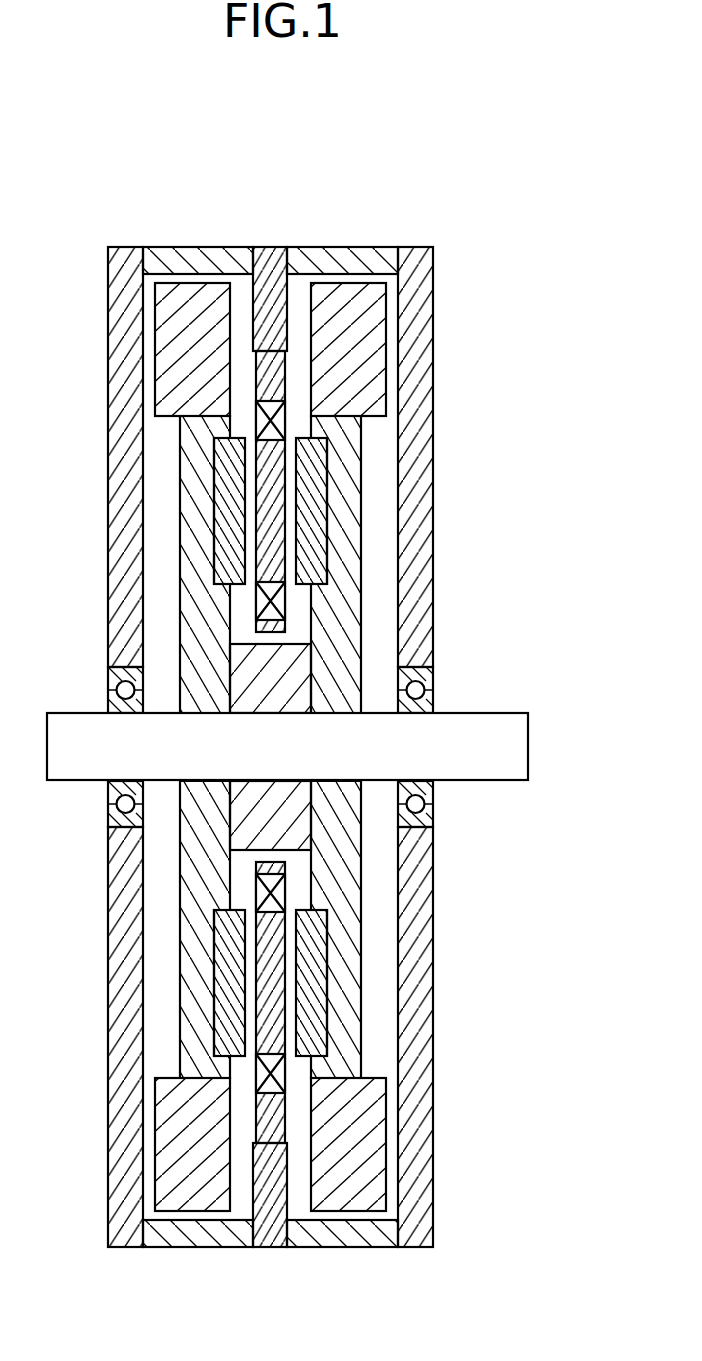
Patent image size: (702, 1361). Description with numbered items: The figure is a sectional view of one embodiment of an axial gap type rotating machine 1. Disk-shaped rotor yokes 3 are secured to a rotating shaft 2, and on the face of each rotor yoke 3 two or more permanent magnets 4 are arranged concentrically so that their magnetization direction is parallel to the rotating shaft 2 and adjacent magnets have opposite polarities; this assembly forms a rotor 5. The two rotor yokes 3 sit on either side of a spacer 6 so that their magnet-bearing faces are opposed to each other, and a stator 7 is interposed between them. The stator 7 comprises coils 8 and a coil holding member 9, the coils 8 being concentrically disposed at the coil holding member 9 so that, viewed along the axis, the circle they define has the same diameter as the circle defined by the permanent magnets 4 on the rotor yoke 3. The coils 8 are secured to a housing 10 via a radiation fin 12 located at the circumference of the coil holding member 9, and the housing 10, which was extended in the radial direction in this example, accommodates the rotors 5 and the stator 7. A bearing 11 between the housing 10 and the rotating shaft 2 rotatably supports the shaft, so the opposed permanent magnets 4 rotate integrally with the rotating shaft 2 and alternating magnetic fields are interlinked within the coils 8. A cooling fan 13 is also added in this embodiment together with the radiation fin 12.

The motor 1 is at (490, 208).
The rotating shaft 2 is at (520, 742).
The rotor yoke 3 is at (350, 485).
The permanent magnet 4 is at (225, 543).
The rotor 5 is at (368, 445).
The spacer 6 is at (237, 660).
The stator 7 is at (273, 247).
The coil 8 is at (273, 613).
The coil holding member 9 is at (278, 540).
The housing 10 is at (422, 332).
The bearing 11 is at (423, 675).
The radiation fin 12 is at (262, 268).
The cooling fan 13 is at (181, 293).